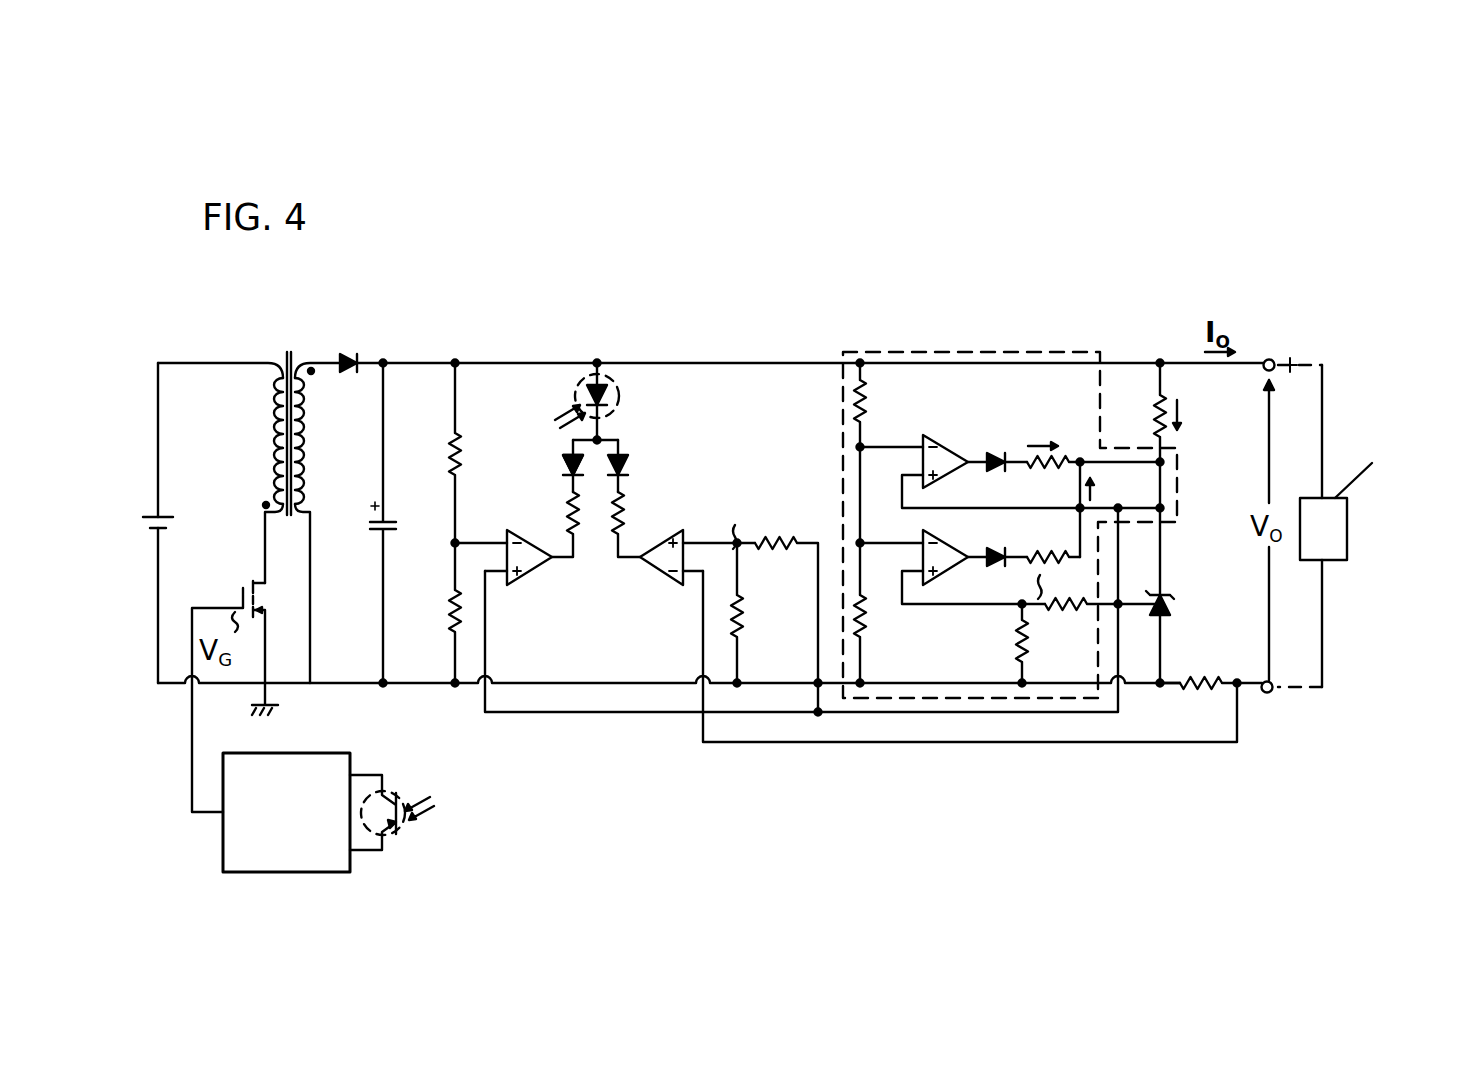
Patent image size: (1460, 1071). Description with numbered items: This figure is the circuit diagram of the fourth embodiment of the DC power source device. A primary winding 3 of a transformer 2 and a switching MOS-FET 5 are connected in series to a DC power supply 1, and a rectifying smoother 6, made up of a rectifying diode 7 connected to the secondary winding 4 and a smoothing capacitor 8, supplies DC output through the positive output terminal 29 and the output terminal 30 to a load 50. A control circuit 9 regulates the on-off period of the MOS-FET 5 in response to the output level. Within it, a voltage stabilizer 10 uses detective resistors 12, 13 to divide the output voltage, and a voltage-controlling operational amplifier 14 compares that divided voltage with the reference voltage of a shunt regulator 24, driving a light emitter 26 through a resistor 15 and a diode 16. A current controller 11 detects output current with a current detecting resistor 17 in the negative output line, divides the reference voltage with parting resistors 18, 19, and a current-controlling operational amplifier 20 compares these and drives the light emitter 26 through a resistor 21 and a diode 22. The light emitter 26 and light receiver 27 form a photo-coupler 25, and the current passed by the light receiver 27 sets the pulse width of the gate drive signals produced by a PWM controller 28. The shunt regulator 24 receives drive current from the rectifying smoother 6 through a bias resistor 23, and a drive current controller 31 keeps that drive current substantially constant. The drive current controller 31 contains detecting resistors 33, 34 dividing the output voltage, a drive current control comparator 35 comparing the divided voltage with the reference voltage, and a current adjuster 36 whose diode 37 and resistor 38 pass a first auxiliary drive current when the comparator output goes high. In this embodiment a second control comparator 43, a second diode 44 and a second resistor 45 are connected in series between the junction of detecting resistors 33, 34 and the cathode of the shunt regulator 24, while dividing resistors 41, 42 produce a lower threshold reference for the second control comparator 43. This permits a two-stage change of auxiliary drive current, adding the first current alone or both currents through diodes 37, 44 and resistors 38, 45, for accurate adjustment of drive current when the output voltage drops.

The DC power supply 1 is at (145, 516).
The transformer 2 is at (289, 491).
The primary winding 3 is at (268, 441).
The secondary winding 4 is at (312, 441).
The MOS-FET 5 is at (246, 582).
The rectifying smoother 6 is at (373, 334).
The rectifying diode 7 is at (346, 346).
The smoothing capacitor 8 is at (370, 530).
The control circuit 9 is at (822, 820).
The voltage stabilizer 10 is at (596, 526).
The current controller 11 is at (764, 558).
The detective resistor 12 is at (449, 445).
The detective resistor 13 is at (447, 605).
The voltage-controlling operational amplifier 14 is at (522, 585).
The resistor 15 is at (562, 516).
The diode 16 is at (562, 469).
The current detecting resistor 17 is at (1199, 690).
The parting resistor 18 is at (774, 534).
The parting resistor 19 is at (743, 618).
The current-controlling operational amplifier 20 is at (664, 585).
The resistor 21 is at (623, 516).
The diode 22 is at (623, 469).
The bias resistor 23 is at (1160, 402).
The shunt regulator 24 is at (1159, 590).
The photo-coupler 25 is at (543, 407).
The light emitter 26 is at (614, 411).
The light receiver 27 is at (398, 790).
The PWM controller 28 is at (298, 753).
The DC output positive terminal 29 is at (1269, 352).
The DC output terminal 30 is at (1268, 694).
The drive current controller 31 is at (981, 525).
The detecting resistor 33 is at (867, 402).
The detecting resistor 34 is at (867, 624).
The drive current control comparator 35 is at (1013, 452).
The current adjuster 36 is at (1013, 417).
The diode 37 is at (992, 470).
The resistor 38 is at (1045, 470).
The dividing resistor 41 is at (1091, 628).
The dividing resistor 42 is at (1021, 645).
The second control comparator 43 is at (959, 547).
The second diode 44 is at (995, 568).
The second resistor 45 is at (1043, 557).
The load 50 is at (1358, 526).